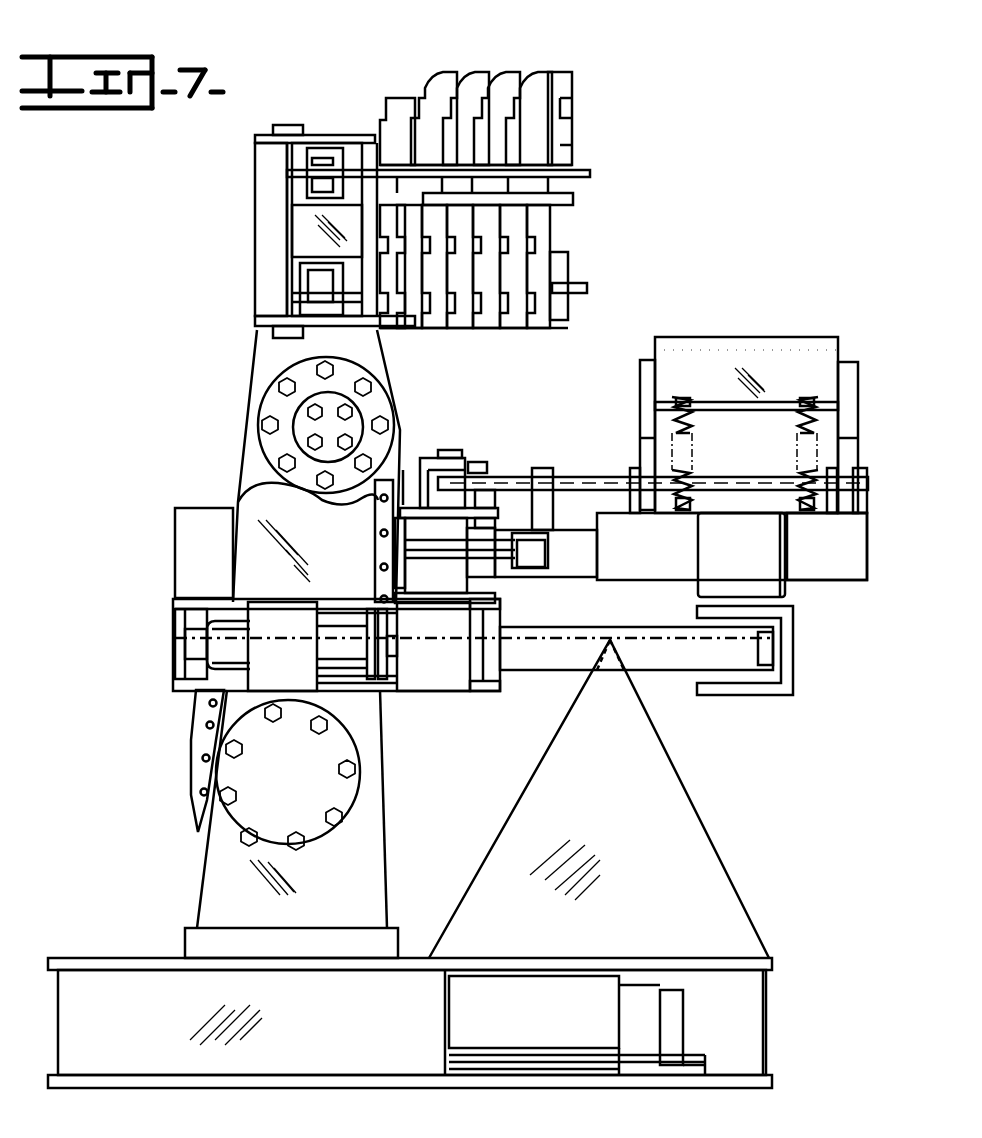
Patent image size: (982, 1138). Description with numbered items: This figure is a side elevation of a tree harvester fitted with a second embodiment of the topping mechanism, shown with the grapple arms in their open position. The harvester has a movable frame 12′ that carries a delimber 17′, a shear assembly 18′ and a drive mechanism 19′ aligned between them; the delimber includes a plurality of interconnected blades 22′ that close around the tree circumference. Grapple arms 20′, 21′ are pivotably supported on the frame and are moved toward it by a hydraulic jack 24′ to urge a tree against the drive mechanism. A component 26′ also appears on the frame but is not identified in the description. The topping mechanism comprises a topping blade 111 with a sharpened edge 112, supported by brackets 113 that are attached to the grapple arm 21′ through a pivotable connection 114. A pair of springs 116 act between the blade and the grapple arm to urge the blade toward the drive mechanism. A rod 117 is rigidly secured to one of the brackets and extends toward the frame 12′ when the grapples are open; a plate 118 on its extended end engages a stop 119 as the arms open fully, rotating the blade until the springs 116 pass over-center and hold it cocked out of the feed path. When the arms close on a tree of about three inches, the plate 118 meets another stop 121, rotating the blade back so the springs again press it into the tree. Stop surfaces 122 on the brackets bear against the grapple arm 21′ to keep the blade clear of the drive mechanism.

The frame 12′ is at (228, 352).
The delimber 17′ is at (585, 203).
The shear assembly 18′ is at (766, 947).
The drive mechanism 19′ is at (412, 408).
The grapple arm 20′ is at (572, 672).
The grapple arm 21′ is at (668, 568).
The delimber blades 22′ is at (440, 72).
The hydraulic jack 24′ is at (380, 552).
The bracket 26′ is at (375, 513).
The topping blade 111 is at (705, 348).
The sharpened edge 112 is at (796, 340).
The brackets 113 is at (644, 388).
The pivotable connection 114 is at (691, 493).
The springs 116 is at (691, 433).
The rod 117 is at (572, 480).
The plate 118 is at (455, 455).
The stop 119 is at (403, 498).
The stop 121 is at (487, 467).
The stop surfaces 122 is at (651, 516).